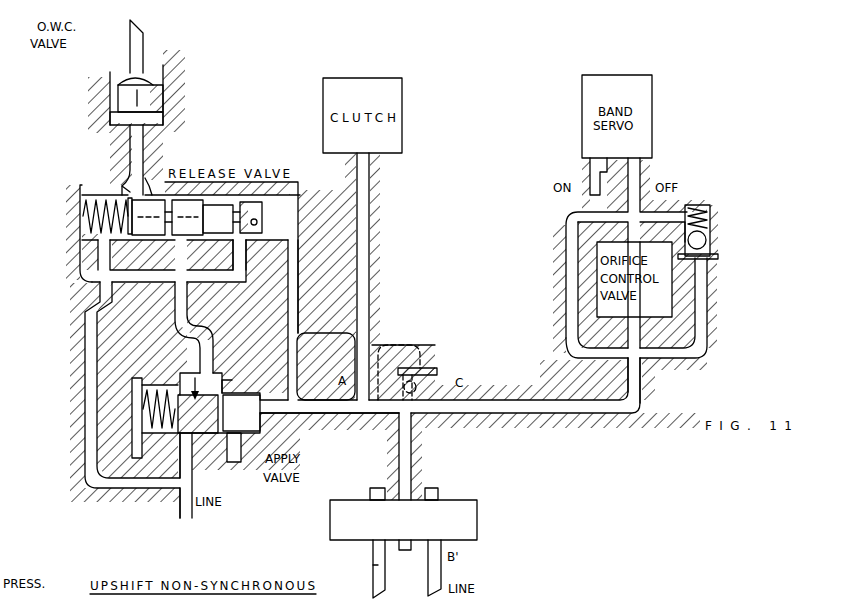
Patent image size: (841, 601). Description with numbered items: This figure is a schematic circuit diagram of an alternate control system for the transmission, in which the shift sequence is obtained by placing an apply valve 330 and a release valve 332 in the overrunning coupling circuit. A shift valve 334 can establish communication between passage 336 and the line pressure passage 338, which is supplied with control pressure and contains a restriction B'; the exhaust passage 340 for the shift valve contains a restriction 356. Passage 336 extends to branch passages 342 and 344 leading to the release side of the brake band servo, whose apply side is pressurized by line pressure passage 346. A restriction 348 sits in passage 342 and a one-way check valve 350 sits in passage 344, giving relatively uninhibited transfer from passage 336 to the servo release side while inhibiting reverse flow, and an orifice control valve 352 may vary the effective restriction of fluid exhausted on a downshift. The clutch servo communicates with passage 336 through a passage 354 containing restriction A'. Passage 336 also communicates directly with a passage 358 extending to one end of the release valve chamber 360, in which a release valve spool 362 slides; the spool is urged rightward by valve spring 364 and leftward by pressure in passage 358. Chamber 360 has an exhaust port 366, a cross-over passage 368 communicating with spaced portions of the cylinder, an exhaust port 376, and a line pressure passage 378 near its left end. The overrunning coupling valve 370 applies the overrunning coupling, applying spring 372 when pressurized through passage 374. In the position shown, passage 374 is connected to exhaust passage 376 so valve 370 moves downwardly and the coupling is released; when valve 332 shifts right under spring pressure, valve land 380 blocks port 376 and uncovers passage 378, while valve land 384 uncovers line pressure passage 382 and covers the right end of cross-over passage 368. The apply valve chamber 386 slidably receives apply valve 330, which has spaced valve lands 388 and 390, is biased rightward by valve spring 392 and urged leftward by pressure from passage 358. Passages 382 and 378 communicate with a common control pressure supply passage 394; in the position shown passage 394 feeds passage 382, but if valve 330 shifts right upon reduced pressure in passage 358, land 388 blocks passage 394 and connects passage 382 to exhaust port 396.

The apply valve 330 is at (194, 378).
The release valve 332 is at (257, 182).
The shift valve 334 is at (493, 480).
The passage 336 is at (399, 445).
The line pressure passage 338 is at (437, 590).
The exhaust passage 340 is at (372, 553).
The branch passage 342 is at (566, 290).
The branch passage 344 is at (705, 275).
The line pressure passage 346 is at (590, 162).
The restriction 348 is at (566, 265).
The one-way check valve 350 is at (712, 237).
The orifice control valve 352 is at (648, 316).
The passage 354 is at (362, 297).
The restriction 356 is at (373, 570).
The passage 358 is at (300, 357).
The release valve chamber 360 is at (277, 200).
The release valve spool 362 is at (252, 222).
The valve spring 364 is at (80, 188).
The exhaust port 366 is at (240, 265).
The cross-over passage 368 is at (160, 291).
The overrunning coupling valve 370 is at (121, 90).
The overrunning coupling spring 372 is at (145, 44).
The passage 374 is at (145, 133).
The exhaust port 376 is at (136, 247).
The line pressure passage 378 is at (92, 297).
The valve land 380 is at (128, 181).
The line pressure passage 382 is at (186, 318).
The valve land 384 is at (150, 178).
The apply valve chamber 386 is at (191, 452).
The valve land 388 is at (160, 456).
The valve land 390 is at (236, 462).
The valve spring 392 is at (147, 383).
The control pressure supply passage 394 is at (178, 512).
The exhaust port 396 is at (224, 470).